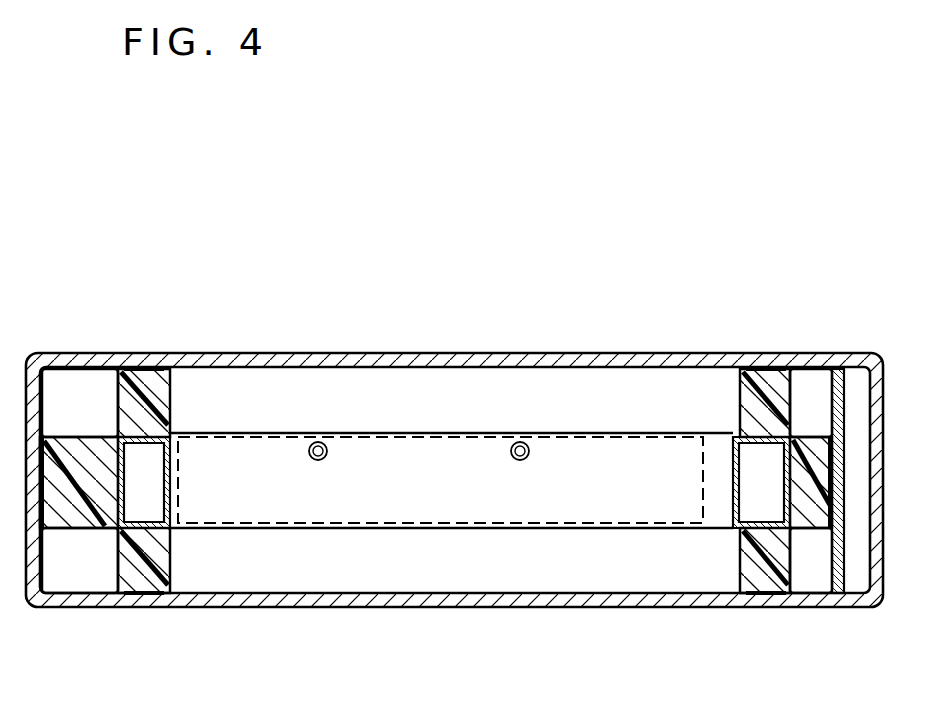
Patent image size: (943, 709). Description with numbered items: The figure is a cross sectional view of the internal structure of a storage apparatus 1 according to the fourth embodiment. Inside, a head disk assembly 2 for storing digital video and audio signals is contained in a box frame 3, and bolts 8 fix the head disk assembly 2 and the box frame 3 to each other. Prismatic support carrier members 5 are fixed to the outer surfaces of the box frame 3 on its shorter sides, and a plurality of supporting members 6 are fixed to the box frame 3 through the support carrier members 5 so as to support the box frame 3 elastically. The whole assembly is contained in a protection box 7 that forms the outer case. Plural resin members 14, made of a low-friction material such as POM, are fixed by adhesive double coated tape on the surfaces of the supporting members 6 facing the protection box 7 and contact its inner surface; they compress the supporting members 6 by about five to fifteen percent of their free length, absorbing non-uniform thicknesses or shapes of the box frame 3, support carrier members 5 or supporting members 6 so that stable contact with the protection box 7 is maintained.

The storage apparatus 1 is at (804, 330).
The head disk assembly 2 is at (700, 484).
The box frame 3 is at (714, 532).
The support carrier member 5 is at (178, 447).
The supporting member 6 is at (185, 374).
The protection box 7 is at (835, 354).
The bolt 8 is at (326, 458).
The resin member 14 is at (143, 367).